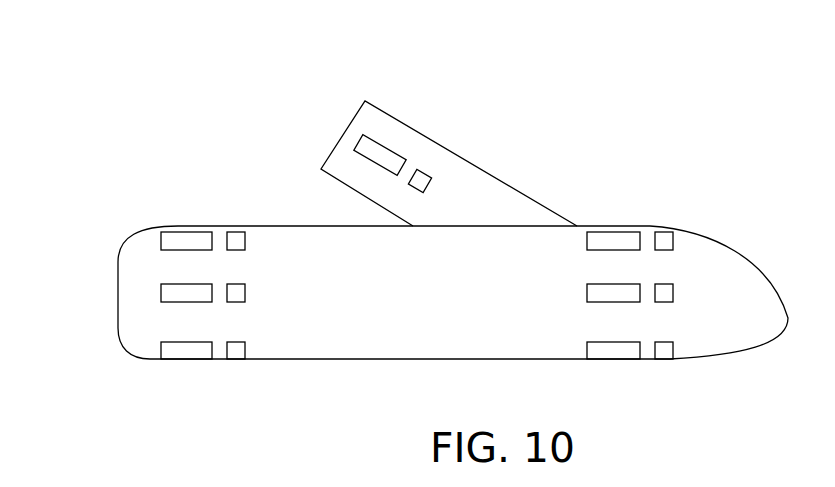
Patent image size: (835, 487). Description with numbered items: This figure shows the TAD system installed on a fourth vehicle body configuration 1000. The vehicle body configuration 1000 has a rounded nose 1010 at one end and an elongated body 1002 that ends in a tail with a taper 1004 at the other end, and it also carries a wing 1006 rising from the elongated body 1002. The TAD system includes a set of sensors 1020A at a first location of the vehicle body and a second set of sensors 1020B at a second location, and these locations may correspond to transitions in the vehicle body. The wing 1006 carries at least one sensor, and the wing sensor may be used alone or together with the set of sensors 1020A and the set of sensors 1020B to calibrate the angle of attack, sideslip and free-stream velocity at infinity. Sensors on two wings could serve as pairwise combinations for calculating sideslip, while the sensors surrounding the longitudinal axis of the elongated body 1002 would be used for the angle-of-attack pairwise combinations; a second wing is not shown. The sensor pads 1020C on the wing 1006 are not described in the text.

The fourth vehicle body configuration 1000 is at (132, 41).
The elongated body 1002 is at (288, 226).
The taper 1004 is at (118, 253).
The wing 1006 is at (449, 123).
The rounded nose 1010 is at (773, 282).
The set of sensors 1020A is at (652, 228).
The second set of sensors 1020B is at (203, 228).
The card contact pads 1020C is at (407, 165).